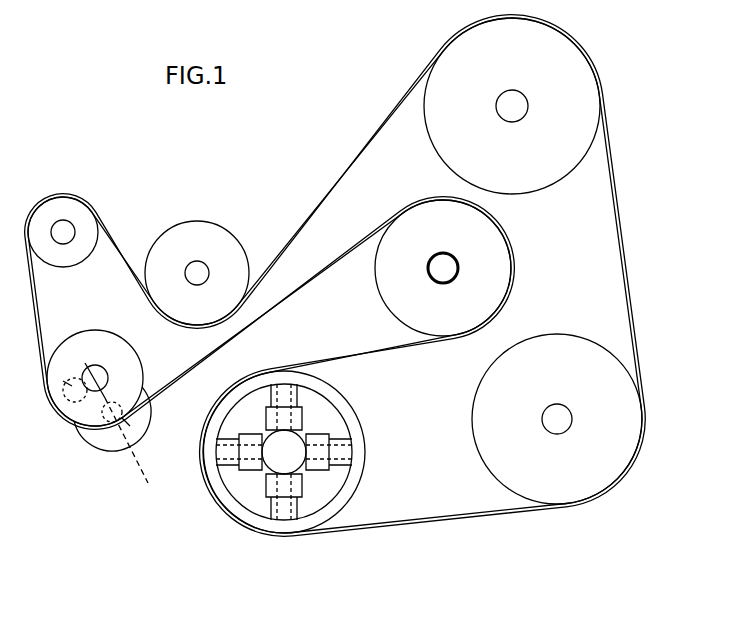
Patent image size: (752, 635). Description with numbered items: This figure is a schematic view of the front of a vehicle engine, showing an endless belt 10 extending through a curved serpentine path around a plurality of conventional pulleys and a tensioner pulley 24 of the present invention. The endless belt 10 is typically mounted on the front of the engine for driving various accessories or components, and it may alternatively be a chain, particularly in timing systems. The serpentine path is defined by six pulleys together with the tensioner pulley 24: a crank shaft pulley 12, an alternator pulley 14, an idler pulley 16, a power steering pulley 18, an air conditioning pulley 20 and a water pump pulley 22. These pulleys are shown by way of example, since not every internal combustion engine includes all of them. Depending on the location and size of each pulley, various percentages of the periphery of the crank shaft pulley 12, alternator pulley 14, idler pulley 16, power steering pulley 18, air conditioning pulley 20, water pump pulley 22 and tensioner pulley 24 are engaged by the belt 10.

The endless belt 10 is at (617, 197).
The crank shaft pulley 12 is at (367, 438).
The alternator pulley 14 is at (77, 205).
The idler pulley 16 is at (215, 228).
The power steering pulley 18 is at (580, 80).
The air conditioning pulley 20 is at (582, 482).
The water pump pulley 22 is at (497, 267).
The tensioner pulley 24 is at (78, 338).